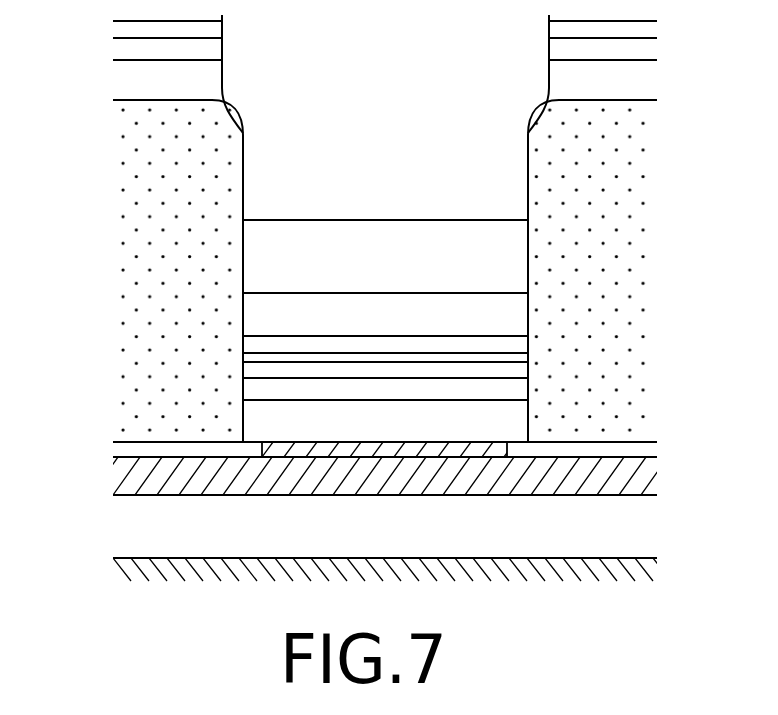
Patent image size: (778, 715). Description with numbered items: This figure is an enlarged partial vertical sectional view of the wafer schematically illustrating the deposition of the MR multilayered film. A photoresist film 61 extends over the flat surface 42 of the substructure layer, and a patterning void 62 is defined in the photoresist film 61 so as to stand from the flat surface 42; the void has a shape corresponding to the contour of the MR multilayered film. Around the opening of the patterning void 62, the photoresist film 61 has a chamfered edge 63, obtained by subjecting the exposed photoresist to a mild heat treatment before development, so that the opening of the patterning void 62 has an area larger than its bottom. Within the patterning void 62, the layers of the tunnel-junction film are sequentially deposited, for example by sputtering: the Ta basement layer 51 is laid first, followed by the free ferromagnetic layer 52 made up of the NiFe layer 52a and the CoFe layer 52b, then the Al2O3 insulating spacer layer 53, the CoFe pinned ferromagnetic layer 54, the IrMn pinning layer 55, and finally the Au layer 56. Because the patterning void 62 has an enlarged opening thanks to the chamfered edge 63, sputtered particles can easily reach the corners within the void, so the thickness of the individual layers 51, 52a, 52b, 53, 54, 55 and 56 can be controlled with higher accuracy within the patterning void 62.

The flat surface 42 is at (125, 442).
The Ta basement layer 51 is at (247, 428).
The free ferromagnetic layer 52 is at (467, 390).
The NiFe layer 52a is at (522, 392).
The CoFe layer 52b is at (523, 370).
The insulating spacer layer 53 is at (248, 356).
The pinned ferromagnetic layer 54 is at (520, 343).
The pinning layer 55 is at (250, 313).
The Au layer 56 is at (522, 278).
The photoresist film 61 is at (165, 108).
The patterning void 62 is at (243, 170).
The chamfered edge 63 is at (233, 116).